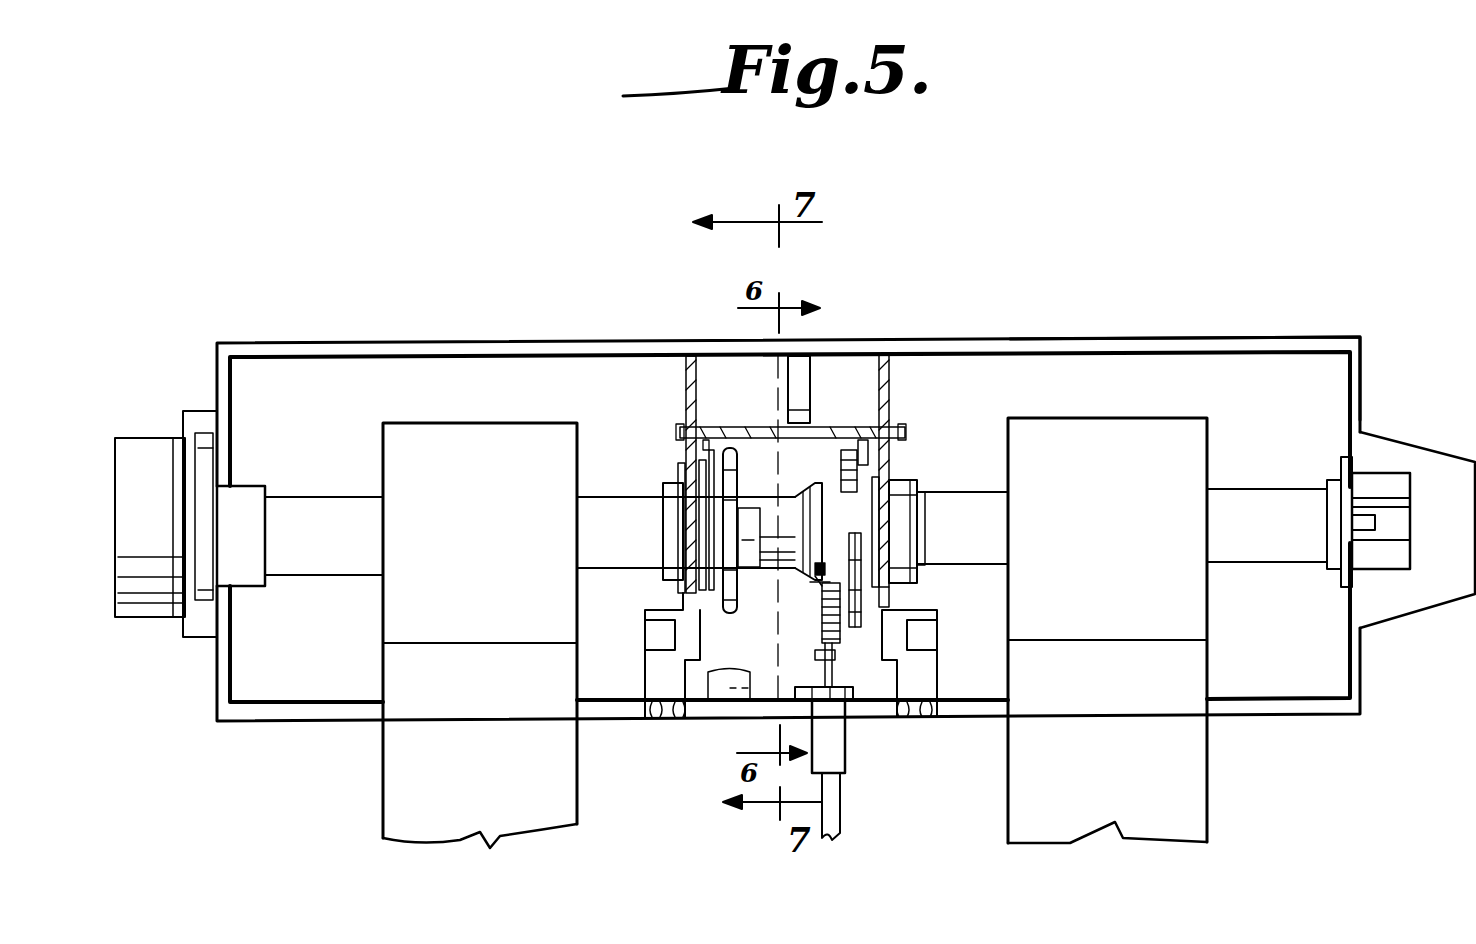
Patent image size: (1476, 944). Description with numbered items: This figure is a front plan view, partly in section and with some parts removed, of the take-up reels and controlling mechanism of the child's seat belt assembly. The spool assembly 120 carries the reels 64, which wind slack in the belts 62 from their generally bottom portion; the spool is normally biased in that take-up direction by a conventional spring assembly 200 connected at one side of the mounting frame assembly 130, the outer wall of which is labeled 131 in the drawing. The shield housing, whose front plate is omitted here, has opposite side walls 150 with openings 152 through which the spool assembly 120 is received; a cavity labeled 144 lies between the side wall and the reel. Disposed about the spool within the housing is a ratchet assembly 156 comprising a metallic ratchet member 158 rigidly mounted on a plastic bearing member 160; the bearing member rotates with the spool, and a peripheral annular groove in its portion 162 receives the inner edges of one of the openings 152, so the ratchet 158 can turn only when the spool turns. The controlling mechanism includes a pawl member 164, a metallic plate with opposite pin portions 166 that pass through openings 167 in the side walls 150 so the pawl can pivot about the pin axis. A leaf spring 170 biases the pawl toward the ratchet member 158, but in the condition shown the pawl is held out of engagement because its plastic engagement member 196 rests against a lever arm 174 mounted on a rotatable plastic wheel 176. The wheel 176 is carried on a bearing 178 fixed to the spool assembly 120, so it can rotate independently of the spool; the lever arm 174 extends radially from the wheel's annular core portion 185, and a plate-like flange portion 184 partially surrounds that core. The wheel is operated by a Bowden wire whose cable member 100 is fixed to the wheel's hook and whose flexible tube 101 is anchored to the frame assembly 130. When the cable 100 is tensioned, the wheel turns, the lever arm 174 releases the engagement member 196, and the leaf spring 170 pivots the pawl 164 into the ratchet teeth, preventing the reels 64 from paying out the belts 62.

The belts 62 is at (407, 802).
The reels 64 is at (417, 424).
The cable member 100 is at (860, 635).
The flexible tube 101 is at (830, 808).
The spool assembly 120 is at (1276, 505).
The mounting frame assembly 130 is at (213, 363).
The housing wall 131 is at (1215, 341).
The cavity 144 is at (603, 430).
The side walls 150 is at (663, 480).
The openings 152 is at (683, 457).
The ratchet assembly 156 is at (706, 448).
The ratchet member 158 is at (740, 600).
The bearing member 160 is at (668, 636).
The portion 162 is at (672, 556).
The pawl member 164 is at (828, 355).
The pin portions 166 is at (680, 433).
The openings 167 is at (683, 420).
The leaf spring 170 is at (800, 365).
The lever arm 174 is at (890, 440).
The wheel 176 is at (822, 582).
The bearing 178 is at (818, 483).
The flange portion 184 is at (840, 667).
The core portion 185 is at (920, 507).
The engagement member 196 is at (842, 445).
The spring assembly 200 is at (153, 438).